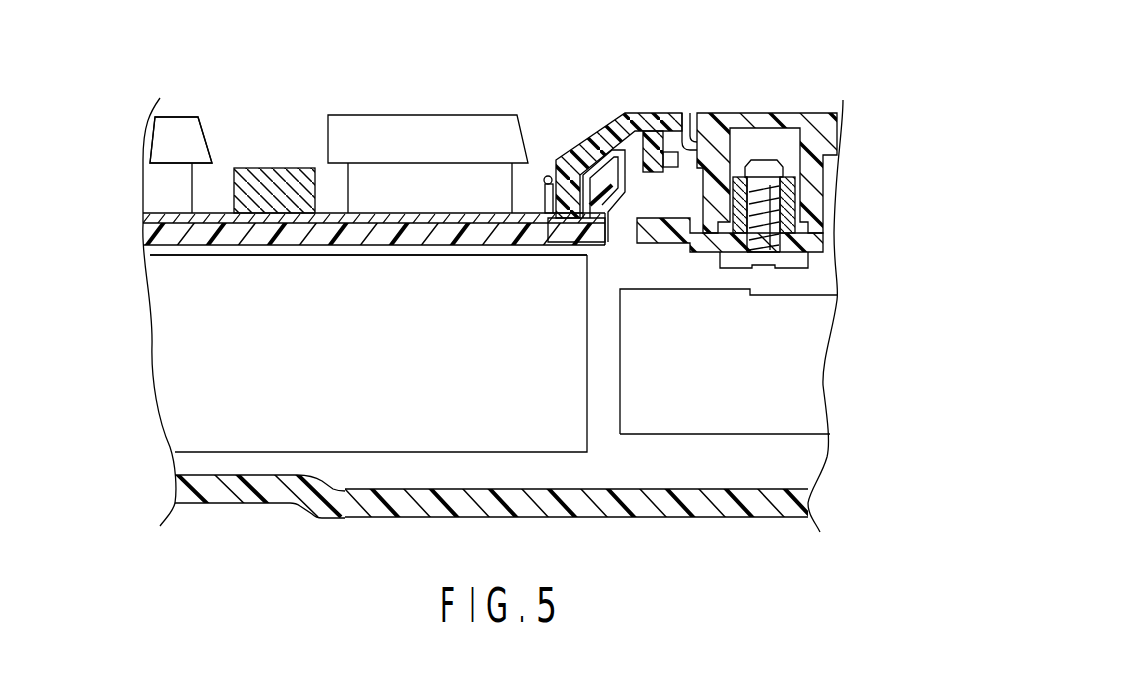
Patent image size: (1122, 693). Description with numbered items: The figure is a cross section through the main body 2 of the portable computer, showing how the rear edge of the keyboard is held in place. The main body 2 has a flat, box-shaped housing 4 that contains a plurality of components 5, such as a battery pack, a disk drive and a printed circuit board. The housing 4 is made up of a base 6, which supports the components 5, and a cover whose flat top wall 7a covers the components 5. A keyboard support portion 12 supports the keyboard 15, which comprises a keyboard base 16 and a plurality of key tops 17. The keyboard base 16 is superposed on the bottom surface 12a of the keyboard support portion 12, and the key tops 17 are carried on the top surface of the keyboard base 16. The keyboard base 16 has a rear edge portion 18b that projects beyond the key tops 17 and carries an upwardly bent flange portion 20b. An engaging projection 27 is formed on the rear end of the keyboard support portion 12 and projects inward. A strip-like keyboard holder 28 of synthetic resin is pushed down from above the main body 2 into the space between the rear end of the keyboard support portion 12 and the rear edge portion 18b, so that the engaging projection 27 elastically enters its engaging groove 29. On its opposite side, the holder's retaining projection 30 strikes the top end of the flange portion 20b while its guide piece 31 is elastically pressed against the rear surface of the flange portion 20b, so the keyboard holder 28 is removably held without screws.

The main body 2 is at (745, 536).
The housing 4 is at (808, 505).
The components 5 is at (570, 437).
The base 6 is at (237, 495).
The top wall 7a is at (838, 112).
The keyboard support portion 12 is at (521, 183).
The bottom surface 12a is at (303, 247).
The keyboard 15 is at (168, 104).
The keyboard base 16 is at (205, 213).
The key tops 17 is at (152, 142).
The rear edge portion 18b is at (560, 242).
The flange portion 20b is at (545, 197).
The engaging projection 27 is at (673, 118).
The keyboard holder 28 is at (605, 125).
The engaging groove 29 is at (705, 112).
The retaining projection 30 is at (540, 175).
The guide piece 31 is at (587, 220).